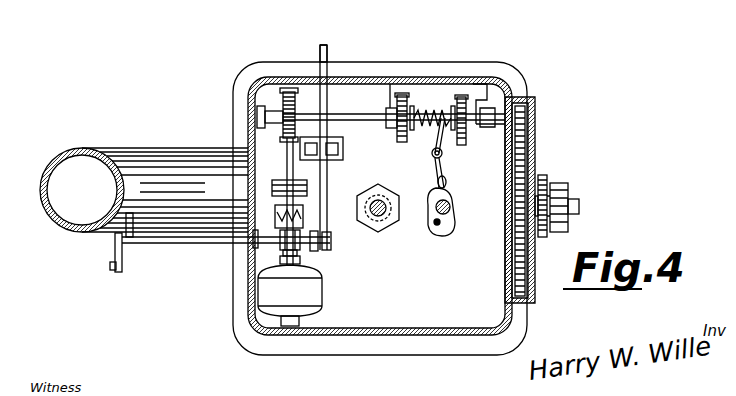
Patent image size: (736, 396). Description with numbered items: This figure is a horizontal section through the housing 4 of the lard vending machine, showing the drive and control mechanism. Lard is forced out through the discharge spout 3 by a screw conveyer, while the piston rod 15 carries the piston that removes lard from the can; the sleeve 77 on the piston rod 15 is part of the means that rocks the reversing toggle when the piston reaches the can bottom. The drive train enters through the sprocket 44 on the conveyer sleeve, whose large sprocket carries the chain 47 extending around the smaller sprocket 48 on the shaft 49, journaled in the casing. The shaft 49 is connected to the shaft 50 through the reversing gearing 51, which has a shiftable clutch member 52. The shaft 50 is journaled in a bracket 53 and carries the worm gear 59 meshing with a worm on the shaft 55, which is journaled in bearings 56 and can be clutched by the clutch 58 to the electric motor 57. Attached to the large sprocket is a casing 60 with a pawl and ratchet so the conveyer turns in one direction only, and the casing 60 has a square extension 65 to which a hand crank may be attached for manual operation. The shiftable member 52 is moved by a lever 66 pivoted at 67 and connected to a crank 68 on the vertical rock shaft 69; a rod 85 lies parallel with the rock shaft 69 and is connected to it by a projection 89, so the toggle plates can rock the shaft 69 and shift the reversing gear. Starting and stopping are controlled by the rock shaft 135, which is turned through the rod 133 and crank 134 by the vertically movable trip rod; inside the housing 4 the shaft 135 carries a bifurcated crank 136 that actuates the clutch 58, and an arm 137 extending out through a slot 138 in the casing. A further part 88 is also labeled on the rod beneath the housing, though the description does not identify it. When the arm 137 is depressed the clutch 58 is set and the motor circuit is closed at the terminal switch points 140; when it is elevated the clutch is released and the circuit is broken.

The discharge spout 3 is at (143, 160).
The housing 4 is at (414, 330).
The piston rod 15 is at (382, 224).
The sprocket 44 is at (546, 176).
The chain 47 is at (523, 166).
The sprocket 48 is at (533, 112).
The shaft 49 is at (493, 117).
The shaft 50 is at (386, 114).
The reversing gearing 51 is at (460, 96).
The shiftable clutch member 52 is at (434, 112).
The bracket 53 is at (392, 128).
The shaft 55 is at (258, 112).
The bearings 56 is at (272, 186).
The electric motor 57 is at (278, 292).
The clutch 58 is at (240, 247).
The worm gear 59 is at (282, 94).
The casing 60 is at (562, 192).
The square extension 65 is at (580, 209).
The lever 66 is at (432, 150).
The pivot 67 is at (443, 154).
The crank 68 is at (450, 186).
The vertical rock shaft 69 is at (452, 212).
The sleeve 77 is at (373, 226).
The rod 85 is at (436, 232).
The stem 88 is at (138, 250).
The projection 89 is at (450, 230).
The rod 133 is at (112, 266).
The crank 134 is at (117, 257).
The rock shaft 135 is at (188, 243).
The bifurcated crank 136 is at (275, 214).
The arm 137 is at (318, 50).
The slot 138 is at (329, 68).
The terminal switch points 140 is at (333, 152).